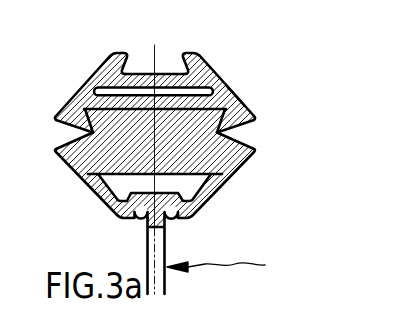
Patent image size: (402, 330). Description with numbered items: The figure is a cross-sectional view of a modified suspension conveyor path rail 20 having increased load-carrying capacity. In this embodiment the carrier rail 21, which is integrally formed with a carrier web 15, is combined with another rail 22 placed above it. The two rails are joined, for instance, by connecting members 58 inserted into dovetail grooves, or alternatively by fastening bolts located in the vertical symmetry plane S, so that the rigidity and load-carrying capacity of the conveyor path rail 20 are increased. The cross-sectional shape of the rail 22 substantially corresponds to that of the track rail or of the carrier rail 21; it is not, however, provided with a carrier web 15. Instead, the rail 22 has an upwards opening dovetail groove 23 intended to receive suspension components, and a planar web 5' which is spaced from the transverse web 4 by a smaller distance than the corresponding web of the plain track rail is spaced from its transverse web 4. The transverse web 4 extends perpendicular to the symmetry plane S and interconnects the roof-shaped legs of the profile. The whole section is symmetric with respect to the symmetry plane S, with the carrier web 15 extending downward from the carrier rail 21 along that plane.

The transverse web 4 is at (110, 81).
The connecting member 58 is at (101, 99).
The planar web 5' is at (155, 40).
The dovetail groove 23 is at (177, 67).
The rail 22 is at (222, 77).
The symmetry plane S is at (240, 92).
The carrier rail 21 is at (83, 191).
The carrier web 15 is at (167, 254).
The conveyor path rail 20 is at (229, 264).